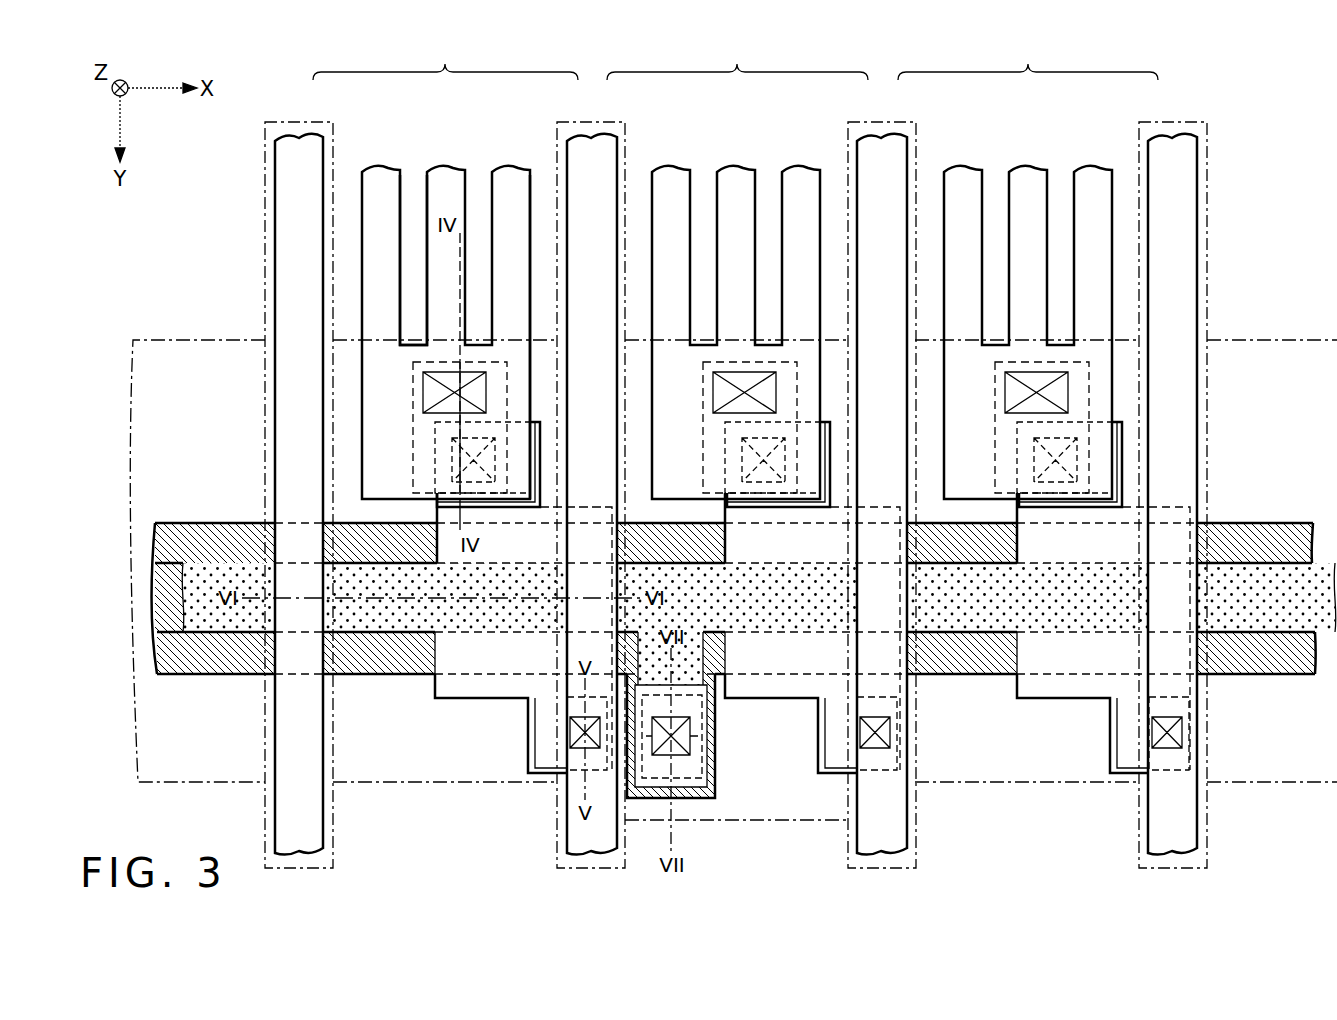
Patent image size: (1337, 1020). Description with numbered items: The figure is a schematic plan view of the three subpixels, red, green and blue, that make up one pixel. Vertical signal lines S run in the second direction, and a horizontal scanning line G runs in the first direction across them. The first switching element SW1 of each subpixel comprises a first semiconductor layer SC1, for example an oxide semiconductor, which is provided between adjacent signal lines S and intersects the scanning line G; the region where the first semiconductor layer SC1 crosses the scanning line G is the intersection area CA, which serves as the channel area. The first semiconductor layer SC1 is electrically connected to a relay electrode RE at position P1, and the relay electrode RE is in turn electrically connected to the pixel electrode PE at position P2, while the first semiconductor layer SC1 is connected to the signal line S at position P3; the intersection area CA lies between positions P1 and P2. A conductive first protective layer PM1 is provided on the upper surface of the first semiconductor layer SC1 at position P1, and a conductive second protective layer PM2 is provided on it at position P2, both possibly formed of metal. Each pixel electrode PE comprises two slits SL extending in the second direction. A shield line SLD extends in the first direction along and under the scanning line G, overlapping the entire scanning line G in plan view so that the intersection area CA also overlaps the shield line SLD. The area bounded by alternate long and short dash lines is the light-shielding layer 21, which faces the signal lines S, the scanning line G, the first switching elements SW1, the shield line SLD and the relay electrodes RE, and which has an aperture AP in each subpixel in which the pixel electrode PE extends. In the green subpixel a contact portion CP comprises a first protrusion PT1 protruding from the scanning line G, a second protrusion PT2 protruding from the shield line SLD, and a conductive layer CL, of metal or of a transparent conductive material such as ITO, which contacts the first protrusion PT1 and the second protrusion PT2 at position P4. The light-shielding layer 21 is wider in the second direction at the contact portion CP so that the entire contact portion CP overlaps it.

The light-shielding layer 21 is at (186, 338).
The signal line S is at (1178, 155).
The slit SL is at (415, 173).
The pixel electrode PE is at (457, 165).
The aperture AP is at (532, 142).
The scanning line G is at (219, 560).
The intersection area CA is at (505, 612).
The shield line SLD is at (203, 676).
The relay electrode RE is at (507, 400).
The position P1 is at (452, 460).
The position P2 is at (423, 392).
The position P3 is at (569, 737).
The position P4 is at (692, 740).
The first protective layer PM1 is at (541, 458).
The second protective layer PM2 is at (545, 772).
The first switching element SW1 is at (457, 740).
The first semiconductor layer SC1 is at (436, 698).
The contact portion CP is at (736, 796).
The first protrusion PT1 is at (696, 658).
The second protrusion PT2 is at (702, 802).
The conductive layer CL is at (645, 800).